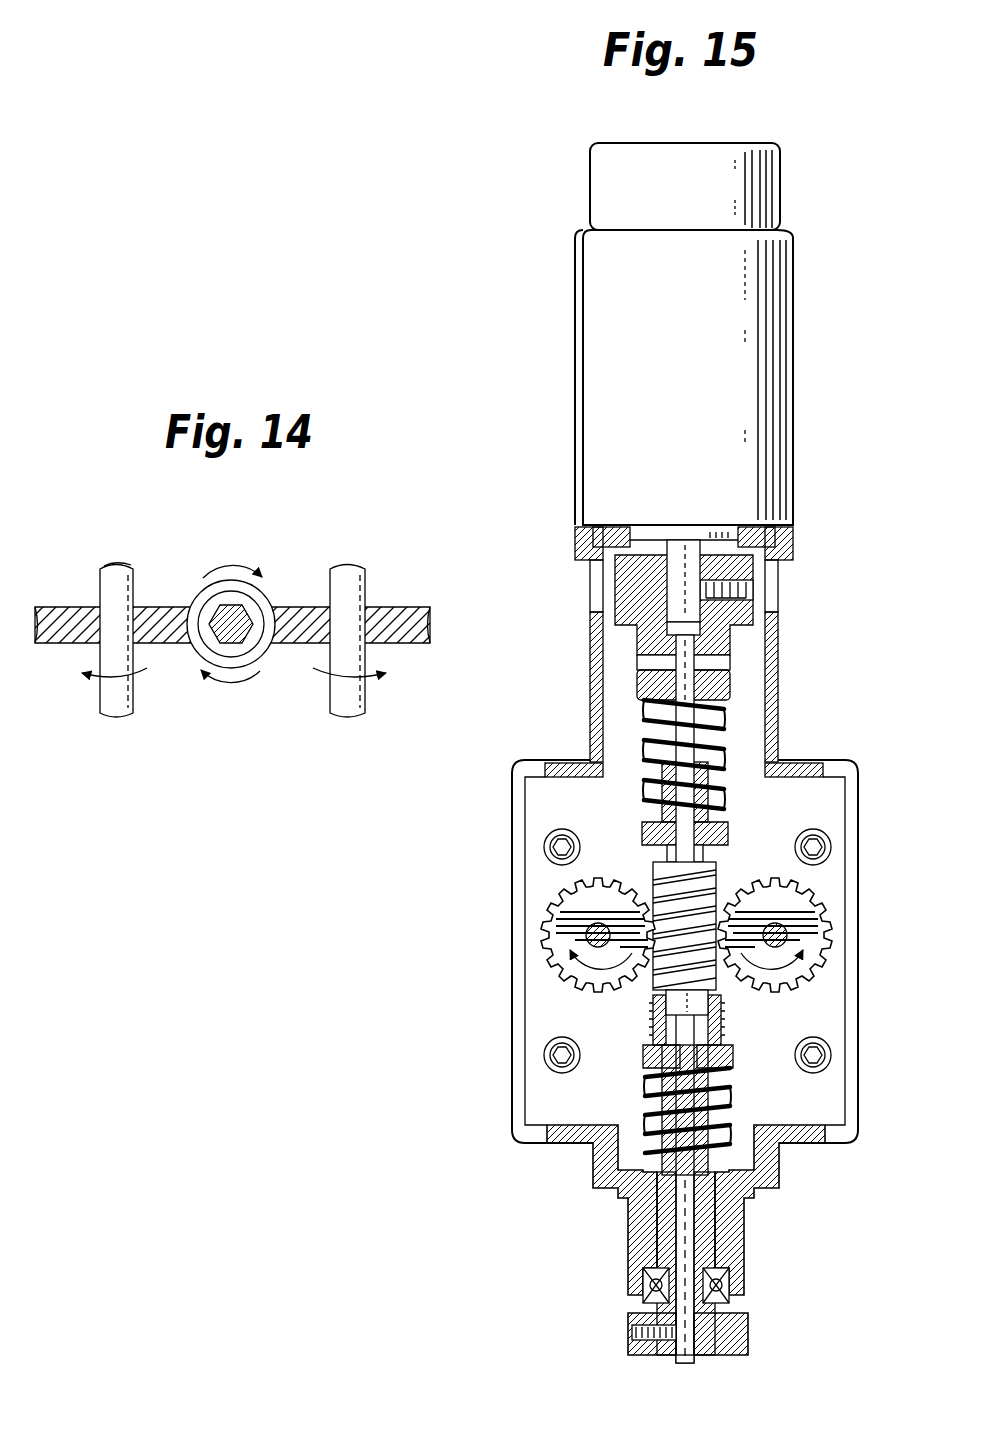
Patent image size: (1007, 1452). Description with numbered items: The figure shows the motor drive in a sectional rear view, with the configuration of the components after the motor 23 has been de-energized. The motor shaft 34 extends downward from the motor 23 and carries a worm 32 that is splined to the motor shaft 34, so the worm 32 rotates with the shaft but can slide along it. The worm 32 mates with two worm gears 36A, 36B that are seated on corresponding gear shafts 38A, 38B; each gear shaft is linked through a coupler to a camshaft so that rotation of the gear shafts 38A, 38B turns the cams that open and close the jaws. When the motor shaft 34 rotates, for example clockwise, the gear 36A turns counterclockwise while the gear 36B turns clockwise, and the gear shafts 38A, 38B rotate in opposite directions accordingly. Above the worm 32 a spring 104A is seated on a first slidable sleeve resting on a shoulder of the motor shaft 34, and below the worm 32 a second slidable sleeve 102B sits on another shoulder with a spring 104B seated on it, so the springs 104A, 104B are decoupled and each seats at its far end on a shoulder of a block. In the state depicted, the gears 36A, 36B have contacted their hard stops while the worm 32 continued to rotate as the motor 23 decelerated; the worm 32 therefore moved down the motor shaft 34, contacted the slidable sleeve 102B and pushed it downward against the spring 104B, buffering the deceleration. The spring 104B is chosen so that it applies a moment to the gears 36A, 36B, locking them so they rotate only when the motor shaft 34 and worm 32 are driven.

In FIG. 15, the motor 23 is at (571, 311).
In FIG. 14, the worm 32 is at (212, 660).
In FIG. 14, the motor shaft 34 is at (263, 600).
In FIG. 15, the motor shaft 34 is at (688, 684).
In FIG. 14, the worm gear 36A is at (396, 644).
In FIG. 15, the worm gear 36A is at (827, 916).
In FIG. 14, the worm gear 36B is at (74, 644).
In FIG. 15, the worm gear 36B is at (544, 918).
In FIG. 14, the gear shaft 38A is at (362, 576).
In FIG. 14, the gear shaft 38B is at (116, 576).
In FIG. 15, the second slidable sleeve 102B is at (720, 1042).
In FIG. 15, the spring 104A is at (728, 755).
In FIG. 15, the spring 104B is at (728, 1108).